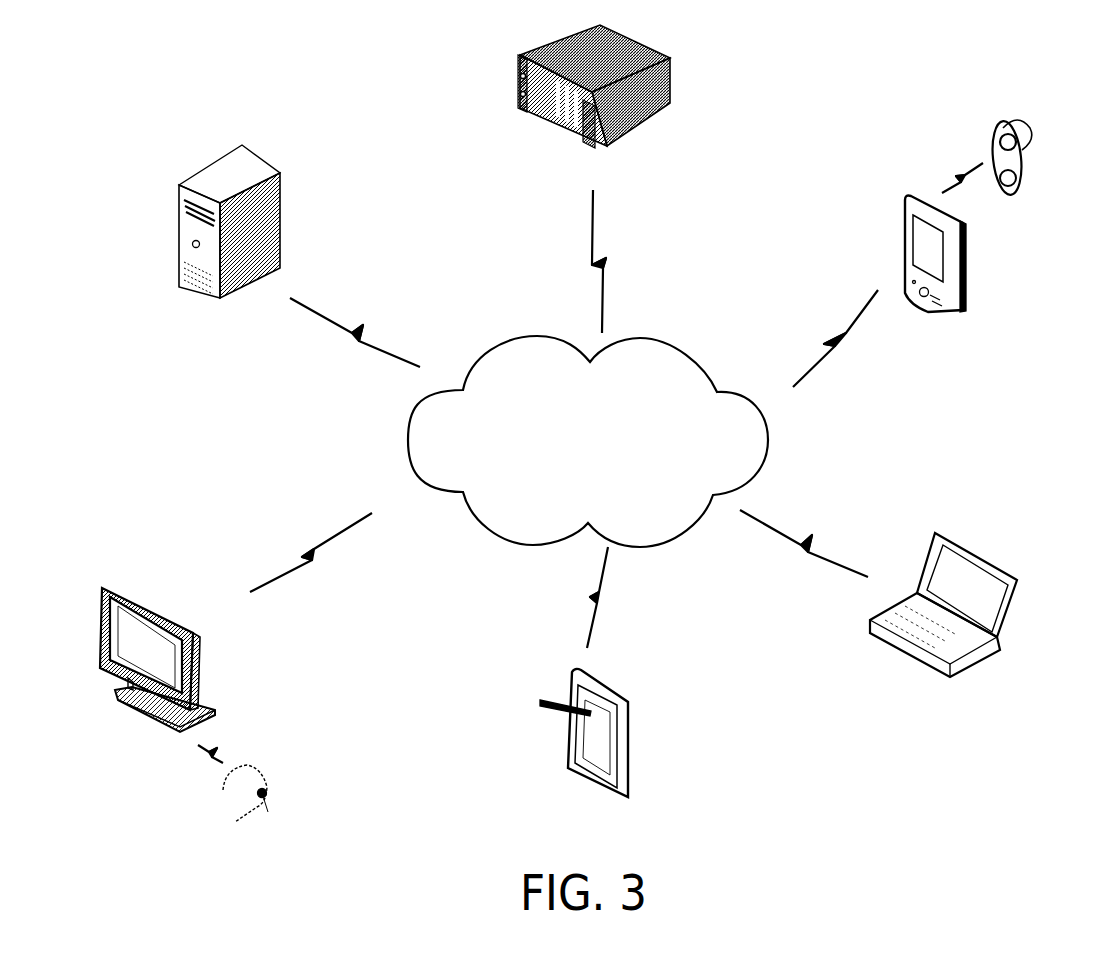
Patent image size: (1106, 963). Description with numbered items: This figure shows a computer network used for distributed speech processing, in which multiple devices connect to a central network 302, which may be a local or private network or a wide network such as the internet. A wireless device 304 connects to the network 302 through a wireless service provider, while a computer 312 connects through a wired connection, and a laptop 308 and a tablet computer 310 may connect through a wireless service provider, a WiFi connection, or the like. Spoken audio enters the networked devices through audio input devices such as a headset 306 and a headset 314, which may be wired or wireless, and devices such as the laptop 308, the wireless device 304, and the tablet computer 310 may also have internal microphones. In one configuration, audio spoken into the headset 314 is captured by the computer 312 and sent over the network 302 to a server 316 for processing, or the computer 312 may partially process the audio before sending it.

The network 302 is at (645, 336).
The wireless device 304 is at (965, 243).
The headset 306 is at (1013, 118).
The laptop 308 is at (952, 535).
The tablet computer 310 is at (626, 695).
The computer 312 is at (155, 603).
The headset 314 is at (275, 165).
The server 316 is at (670, 60).